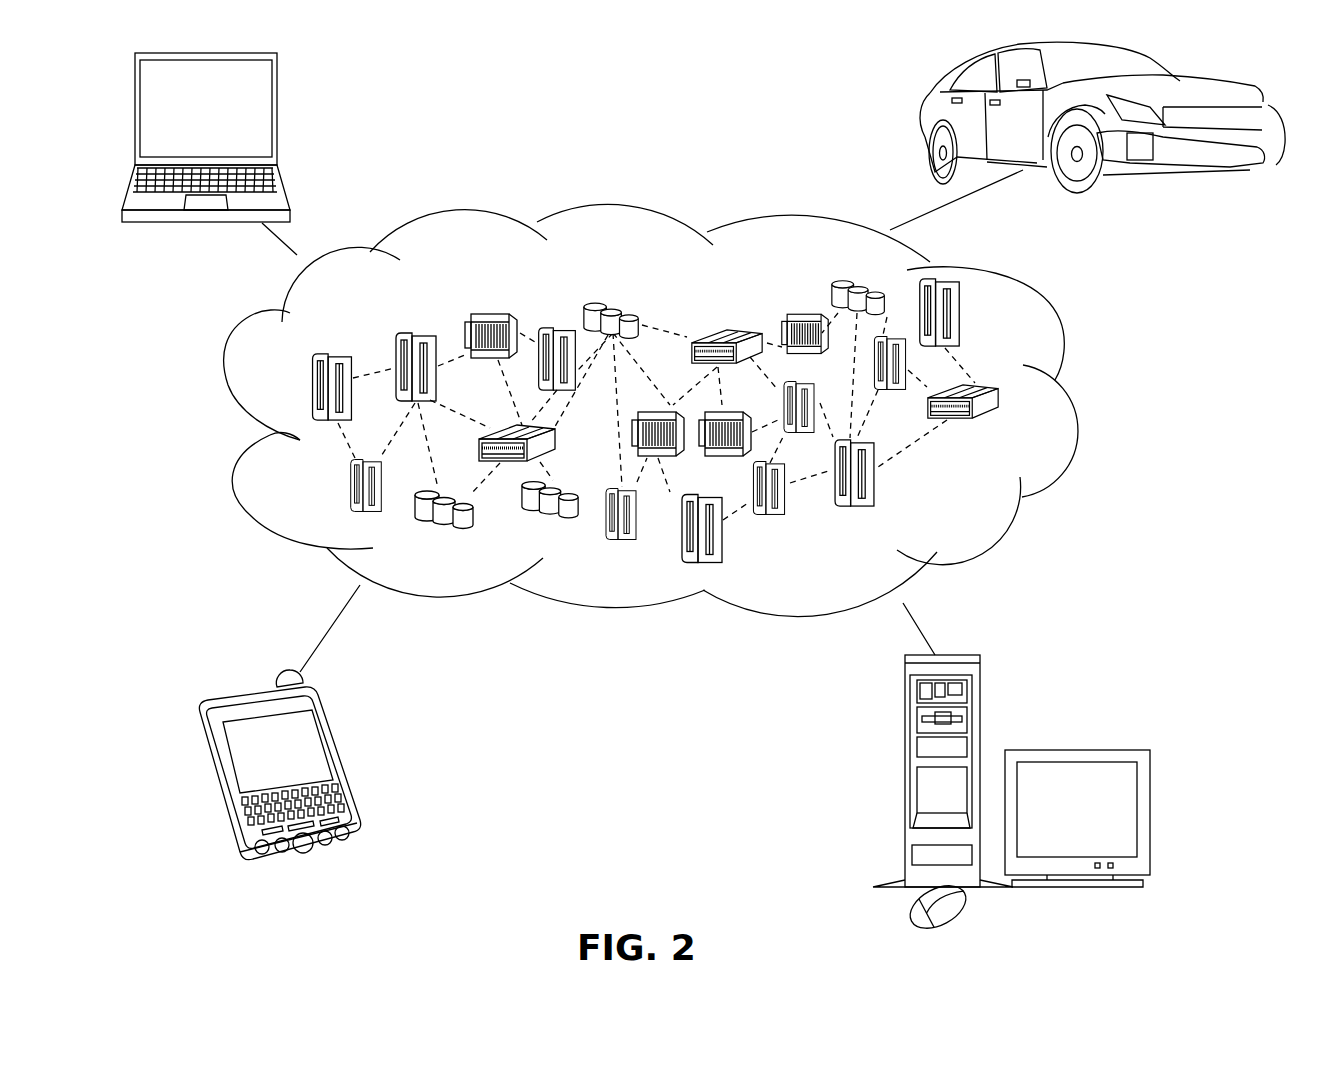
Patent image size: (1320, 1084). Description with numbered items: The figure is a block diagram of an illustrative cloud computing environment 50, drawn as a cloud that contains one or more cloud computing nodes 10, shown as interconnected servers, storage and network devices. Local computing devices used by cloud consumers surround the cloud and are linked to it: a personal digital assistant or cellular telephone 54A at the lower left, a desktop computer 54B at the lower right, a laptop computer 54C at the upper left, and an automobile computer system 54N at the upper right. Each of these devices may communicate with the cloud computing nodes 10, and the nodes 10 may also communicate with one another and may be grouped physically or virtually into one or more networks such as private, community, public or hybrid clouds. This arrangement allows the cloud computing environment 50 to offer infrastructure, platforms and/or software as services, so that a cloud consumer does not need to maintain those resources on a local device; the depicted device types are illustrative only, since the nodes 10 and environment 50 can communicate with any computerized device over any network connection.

The cloud computing node 10 is at (990, 510).
The cloud computing environment 50 is at (1083, 399).
The personal digital assistant (PDA) or cellular telephone 54A is at (328, 732).
The desktop computer 54B is at (903, 716).
The laptop computer 54C is at (277, 93).
The automobile computer system 54N is at (930, 107).